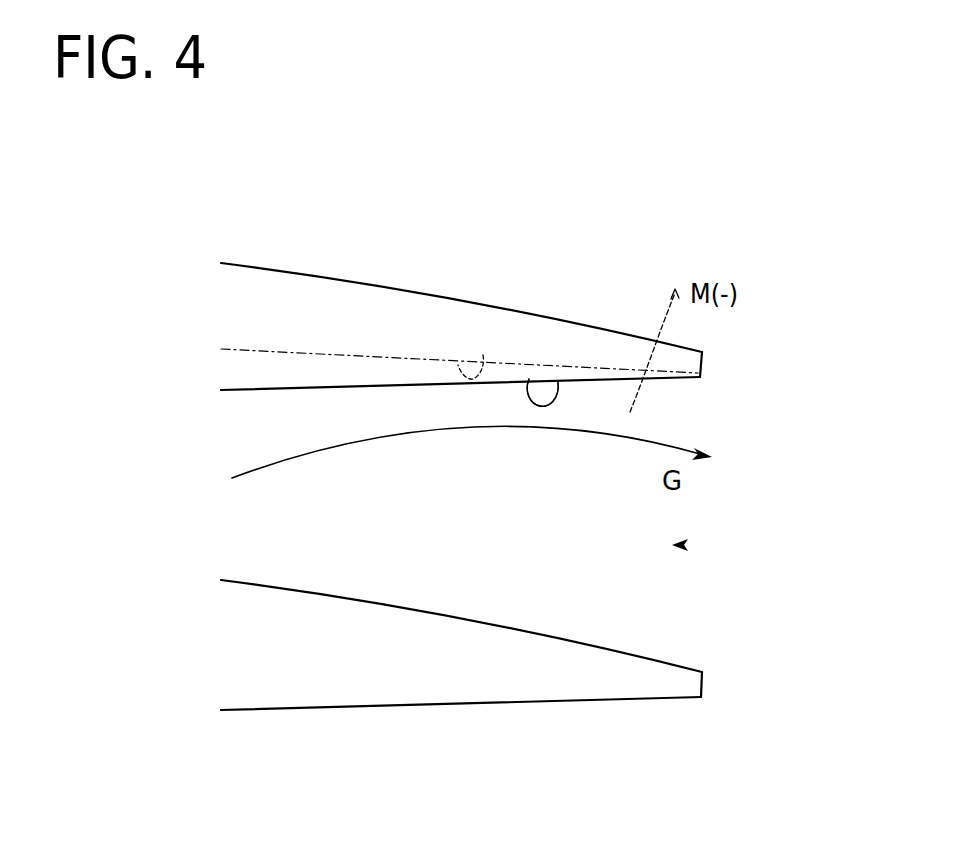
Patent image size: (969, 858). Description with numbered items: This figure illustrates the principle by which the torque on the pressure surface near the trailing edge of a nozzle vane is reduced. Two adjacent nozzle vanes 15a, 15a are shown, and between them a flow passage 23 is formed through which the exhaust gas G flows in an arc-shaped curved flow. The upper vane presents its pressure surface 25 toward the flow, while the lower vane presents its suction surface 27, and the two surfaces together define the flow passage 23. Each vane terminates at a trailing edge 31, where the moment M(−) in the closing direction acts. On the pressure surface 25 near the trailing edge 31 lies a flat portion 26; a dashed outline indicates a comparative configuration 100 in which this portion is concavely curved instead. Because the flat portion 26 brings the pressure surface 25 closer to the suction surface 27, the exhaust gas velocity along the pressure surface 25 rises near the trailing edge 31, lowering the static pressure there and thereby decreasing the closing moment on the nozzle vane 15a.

The nozzle vane 15a is at (300, 244).
The suction surface 27 is at (460, 618).
The trailing edge 31 is at (703, 356).
The configuration 100 is at (483, 355).
The pressure surface 25 is at (558, 382).
The flat portion 26 is at (542, 392).
The flow passage 23 is at (684, 545).